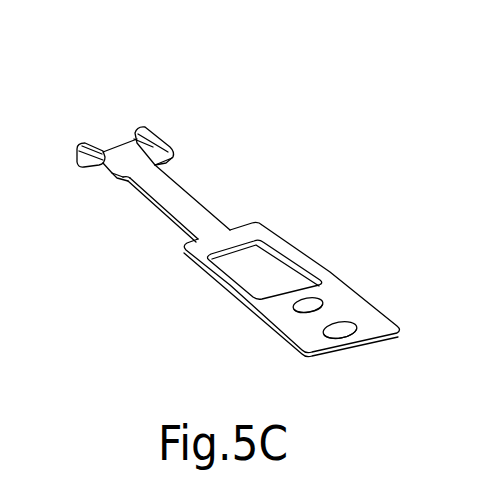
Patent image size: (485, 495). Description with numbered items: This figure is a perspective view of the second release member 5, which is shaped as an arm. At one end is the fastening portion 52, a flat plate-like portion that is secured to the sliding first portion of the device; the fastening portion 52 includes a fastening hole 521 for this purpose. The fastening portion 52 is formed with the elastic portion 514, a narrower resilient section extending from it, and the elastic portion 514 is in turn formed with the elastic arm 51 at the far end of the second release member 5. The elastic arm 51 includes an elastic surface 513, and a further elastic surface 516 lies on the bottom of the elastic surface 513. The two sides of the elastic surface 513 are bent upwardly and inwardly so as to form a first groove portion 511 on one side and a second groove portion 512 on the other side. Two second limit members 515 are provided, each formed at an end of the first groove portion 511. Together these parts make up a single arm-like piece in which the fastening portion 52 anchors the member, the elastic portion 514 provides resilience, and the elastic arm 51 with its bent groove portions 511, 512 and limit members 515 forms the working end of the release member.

The second release member 5 is at (272, 144).
The elastic arm 51 is at (145, 173).
The first groove portion 511 is at (90, 141).
The second groove portion 512 is at (88, 178).
The elastic surface 513 is at (125, 155).
The elastic portion 514 is at (178, 202).
The second limit member 515 is at (137, 130).
The elastic surface 516 is at (110, 180).
The fastening portion 52 is at (343, 303).
The fastening hole 521 is at (247, 268).